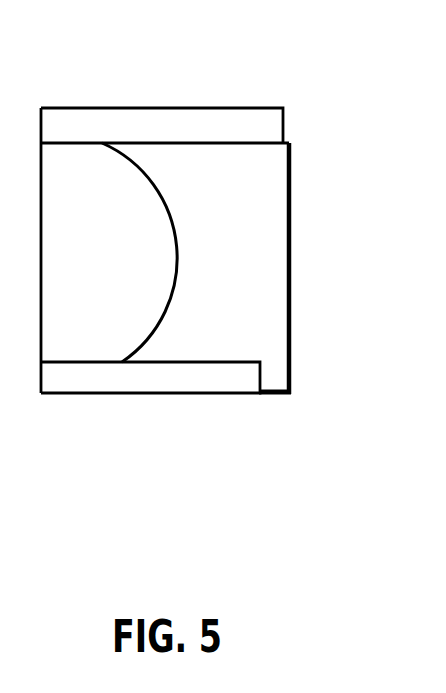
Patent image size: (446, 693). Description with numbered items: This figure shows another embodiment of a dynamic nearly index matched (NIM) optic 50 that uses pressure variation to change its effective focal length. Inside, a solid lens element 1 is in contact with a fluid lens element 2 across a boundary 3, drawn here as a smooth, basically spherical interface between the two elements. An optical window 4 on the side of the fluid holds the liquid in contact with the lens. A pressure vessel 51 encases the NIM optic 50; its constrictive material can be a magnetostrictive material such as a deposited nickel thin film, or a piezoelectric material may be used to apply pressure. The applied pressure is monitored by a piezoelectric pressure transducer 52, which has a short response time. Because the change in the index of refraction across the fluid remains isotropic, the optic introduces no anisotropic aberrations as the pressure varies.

The dynamic NIM optic 50 is at (300, 78).
The pressure vessel 51 is at (80, 108).
The piezoelectric pressure transducer 52 is at (277, 395).
The solid lens element 1 is at (112, 257).
The fluid lens element 2 is at (239, 257).
The boundary 3 is at (142, 178).
The optical window 4 is at (291, 163).